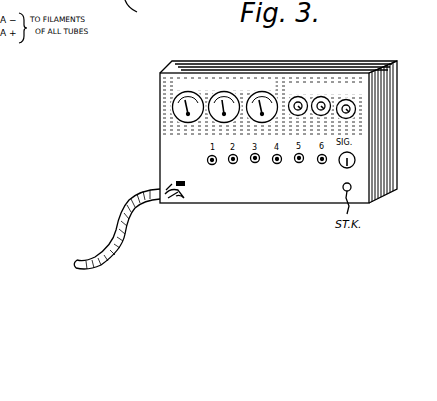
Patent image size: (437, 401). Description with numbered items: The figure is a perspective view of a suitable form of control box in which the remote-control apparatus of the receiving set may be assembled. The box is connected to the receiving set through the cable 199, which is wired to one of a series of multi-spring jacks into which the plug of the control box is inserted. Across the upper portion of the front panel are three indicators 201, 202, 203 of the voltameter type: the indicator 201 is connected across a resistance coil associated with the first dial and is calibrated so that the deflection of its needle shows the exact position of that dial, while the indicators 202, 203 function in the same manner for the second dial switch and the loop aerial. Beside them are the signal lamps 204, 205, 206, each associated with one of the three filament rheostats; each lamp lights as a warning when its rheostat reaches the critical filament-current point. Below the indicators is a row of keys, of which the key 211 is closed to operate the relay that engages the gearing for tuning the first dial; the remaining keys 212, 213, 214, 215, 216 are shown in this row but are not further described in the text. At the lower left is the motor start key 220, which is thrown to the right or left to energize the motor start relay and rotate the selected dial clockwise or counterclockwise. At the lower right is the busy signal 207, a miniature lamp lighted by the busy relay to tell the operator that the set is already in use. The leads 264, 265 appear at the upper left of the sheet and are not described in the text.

The cable 199 is at (126, 233).
The indicator 201 is at (172, 106).
The indicator 202 is at (213, 114).
The indicator 203 is at (250, 117).
The signal lamp 204 is at (302, 99).
The signal lamp 205 is at (324, 104).
The signal lamp 206 is at (345, 110).
The busy signal 207 is at (347, 184).
The key 211 is at (210, 163).
The terminal 2 212 is at (233, 165).
The terminal 3 213 is at (256, 164).
The terminal 4 214 is at (277, 165).
The terminal 5 215 is at (300, 164).
The terminal 6 216 is at (323, 165).
The motor start key 220 is at (185, 196).
The filament lead 264 is at (141, 6).
The filament lead 265 is at (148, 15).